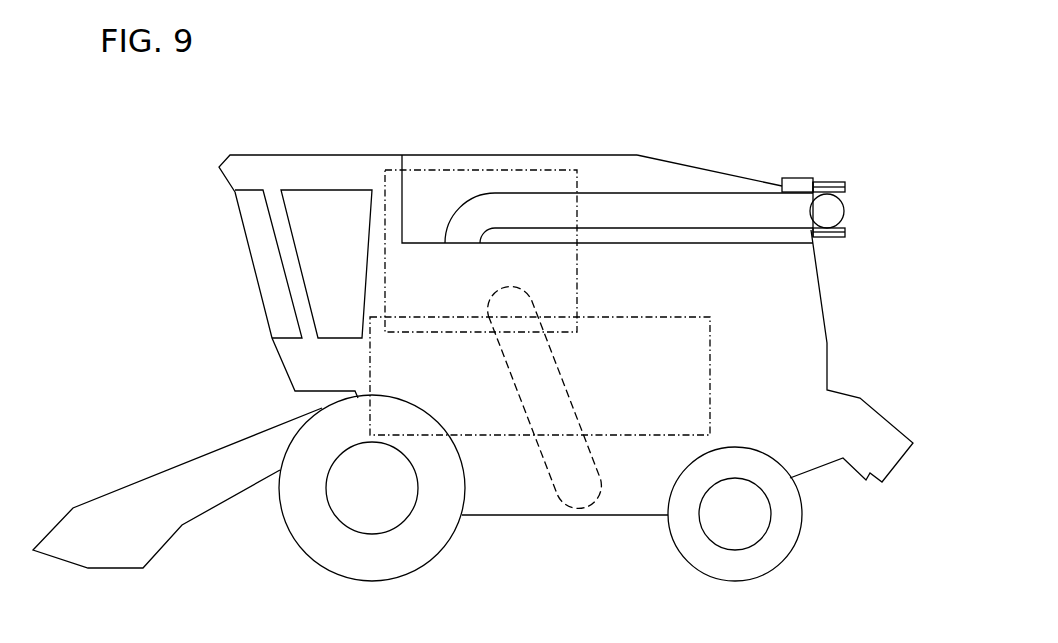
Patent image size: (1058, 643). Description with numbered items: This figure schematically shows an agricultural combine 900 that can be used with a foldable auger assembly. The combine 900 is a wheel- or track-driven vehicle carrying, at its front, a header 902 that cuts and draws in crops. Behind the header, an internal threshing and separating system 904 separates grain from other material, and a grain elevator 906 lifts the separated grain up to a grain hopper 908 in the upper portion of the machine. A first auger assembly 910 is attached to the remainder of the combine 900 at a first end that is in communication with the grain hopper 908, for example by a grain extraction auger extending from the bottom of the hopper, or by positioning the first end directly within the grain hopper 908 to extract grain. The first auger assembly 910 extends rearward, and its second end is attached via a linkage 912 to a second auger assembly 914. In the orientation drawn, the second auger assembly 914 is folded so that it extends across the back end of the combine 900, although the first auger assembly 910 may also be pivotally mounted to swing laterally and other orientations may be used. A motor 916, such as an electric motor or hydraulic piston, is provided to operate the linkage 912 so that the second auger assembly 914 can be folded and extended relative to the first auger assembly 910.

The agricultural combine 900 is at (403, 131).
The header 902 is at (178, 487).
The internal threshing and separating system 904 is at (492, 438).
The grain elevator 906 is at (578, 508).
The grain hopper 908 is at (523, 168).
The first auger assembly 910 is at (733, 208).
The linkage 912 is at (832, 180).
The second auger assembly 914 is at (843, 225).
The motor 916 is at (800, 178).